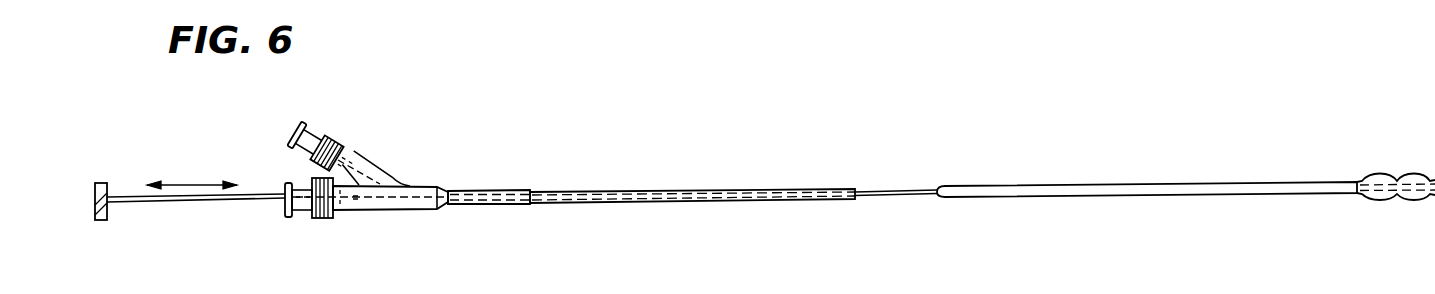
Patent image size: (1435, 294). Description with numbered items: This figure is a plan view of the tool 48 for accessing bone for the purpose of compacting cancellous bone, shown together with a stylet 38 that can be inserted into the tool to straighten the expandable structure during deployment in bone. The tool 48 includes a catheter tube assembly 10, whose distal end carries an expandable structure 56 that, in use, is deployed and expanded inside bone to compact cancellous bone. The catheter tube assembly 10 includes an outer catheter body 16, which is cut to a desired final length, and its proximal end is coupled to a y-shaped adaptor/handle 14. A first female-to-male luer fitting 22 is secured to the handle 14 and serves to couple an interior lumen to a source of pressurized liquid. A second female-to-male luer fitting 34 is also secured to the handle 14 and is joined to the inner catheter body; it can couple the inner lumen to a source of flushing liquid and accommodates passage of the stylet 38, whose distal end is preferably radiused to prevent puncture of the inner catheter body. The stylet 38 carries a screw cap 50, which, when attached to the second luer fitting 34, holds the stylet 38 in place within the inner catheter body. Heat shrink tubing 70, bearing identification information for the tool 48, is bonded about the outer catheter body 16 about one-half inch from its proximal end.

The catheter tube assembly 10 is at (763, 206).
The y-shaped adaptor/handle 14 is at (414, 176).
The outer catheter body 16 is at (1055, 185).
The first female-to-male luer fitting 22 is at (338, 137).
The second female-to-male luer fitting 34 is at (320, 219).
The stylet 38 is at (177, 205).
The tool 48 is at (834, 150).
The screw cap 50 is at (105, 183).
The expandable structure 56 is at (1427, 144).
The heat shrink tubing 70 is at (483, 190).